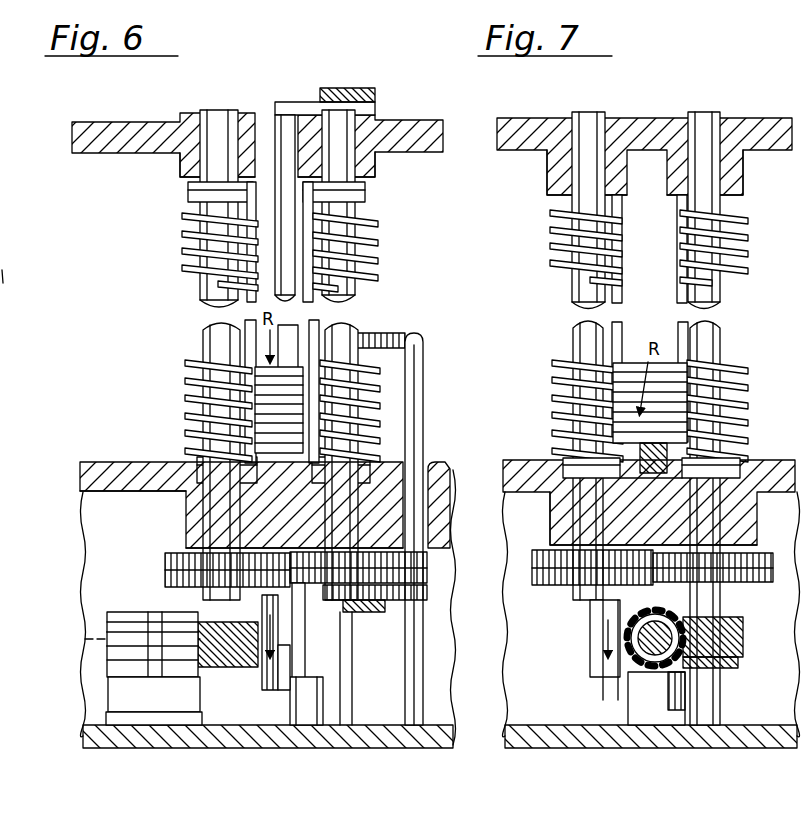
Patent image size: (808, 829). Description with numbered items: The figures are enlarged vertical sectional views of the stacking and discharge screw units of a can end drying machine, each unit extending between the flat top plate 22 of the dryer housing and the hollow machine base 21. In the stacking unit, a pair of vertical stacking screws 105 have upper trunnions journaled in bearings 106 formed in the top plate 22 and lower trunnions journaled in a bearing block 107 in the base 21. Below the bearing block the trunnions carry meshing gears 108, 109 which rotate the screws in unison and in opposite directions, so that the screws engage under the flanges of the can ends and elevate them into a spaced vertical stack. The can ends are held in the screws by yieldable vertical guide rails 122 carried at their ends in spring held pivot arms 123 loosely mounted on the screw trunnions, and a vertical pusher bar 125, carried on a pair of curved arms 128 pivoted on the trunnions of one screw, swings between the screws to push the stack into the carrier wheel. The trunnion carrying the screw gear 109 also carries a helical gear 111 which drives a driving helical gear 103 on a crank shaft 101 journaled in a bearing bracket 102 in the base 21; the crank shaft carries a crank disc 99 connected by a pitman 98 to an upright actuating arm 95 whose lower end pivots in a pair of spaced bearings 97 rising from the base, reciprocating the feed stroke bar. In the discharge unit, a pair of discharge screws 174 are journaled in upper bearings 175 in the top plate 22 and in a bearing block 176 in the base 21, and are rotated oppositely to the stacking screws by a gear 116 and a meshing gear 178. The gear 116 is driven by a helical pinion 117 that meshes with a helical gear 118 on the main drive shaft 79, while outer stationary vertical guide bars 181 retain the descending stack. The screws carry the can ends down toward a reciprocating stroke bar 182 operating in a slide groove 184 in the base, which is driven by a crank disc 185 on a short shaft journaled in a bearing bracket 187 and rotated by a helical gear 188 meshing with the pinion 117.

In FIG. 6, the hollow base 21 is at (440, 492).
In FIG. 7, the hollow base 21 is at (772, 470).
In FIG. 6, the top plate 22 is at (128, 130).
In FIG. 7, the top plate 22 is at (768, 128).
In FIG. 7, the main shaft 79 is at (686, 662).
In FIG. 6, the actuating arm 95 is at (302, 655).
In FIG. 6, the bearings 97 is at (285, 720).
In FIG. 6, the pitman 98 is at (282, 617).
In FIG. 6, the crank disc 99 is at (270, 680).
In FIG. 6, the crank shaft 101 is at (110, 641).
In FIG. 6, the bearing bracket 102 is at (126, 688).
In FIG. 6, the driving helical gear 103 is at (216, 672).
In FIG. 6, the stacking screws 105 is at (366, 243).
In FIG. 6, the bearings 106 is at (188, 165).
In FIG. 6, the bearing block 107 is at (190, 521).
In FIG. 6, the gear 108 is at (400, 562).
In FIG. 6, the screw gear 109 is at (176, 569).
In FIG. 6, the helical gear 111 is at (214, 637).
In FIG. 7, the discharge screw gear 116 is at (745, 572).
In FIG. 7, the helical pinion 117 is at (738, 636).
In FIG. 7, the helical gear 118 is at (636, 674).
In FIG. 6, the yieldable guide rails 122 is at (242, 325).
In FIG. 6, the spring held pivot arms 123 is at (190, 188).
In FIG. 6, the pusher bar 125 is at (288, 137).
In FIG. 6, the curved arms 128 is at (302, 108).
In FIG. 7, the discharge screws 174 is at (552, 226).
In FIG. 7, the upper bearings 175 is at (560, 178).
In FIG. 7, the bearing block 176 is at (556, 520).
In FIG. 7, the gear 178 is at (540, 569).
In FIG. 7, the outer stationary vertical guide bars 181 is at (678, 328).
In FIG. 7, the stroke bar 182 is at (656, 473).
In FIG. 7, the slide groove 184 is at (656, 493).
In FIG. 7, the crank disc 185 is at (598, 668).
In FIG. 7, the bearing bracket 187 is at (658, 692).
In FIG. 7, the helical gear 188 is at (738, 664).